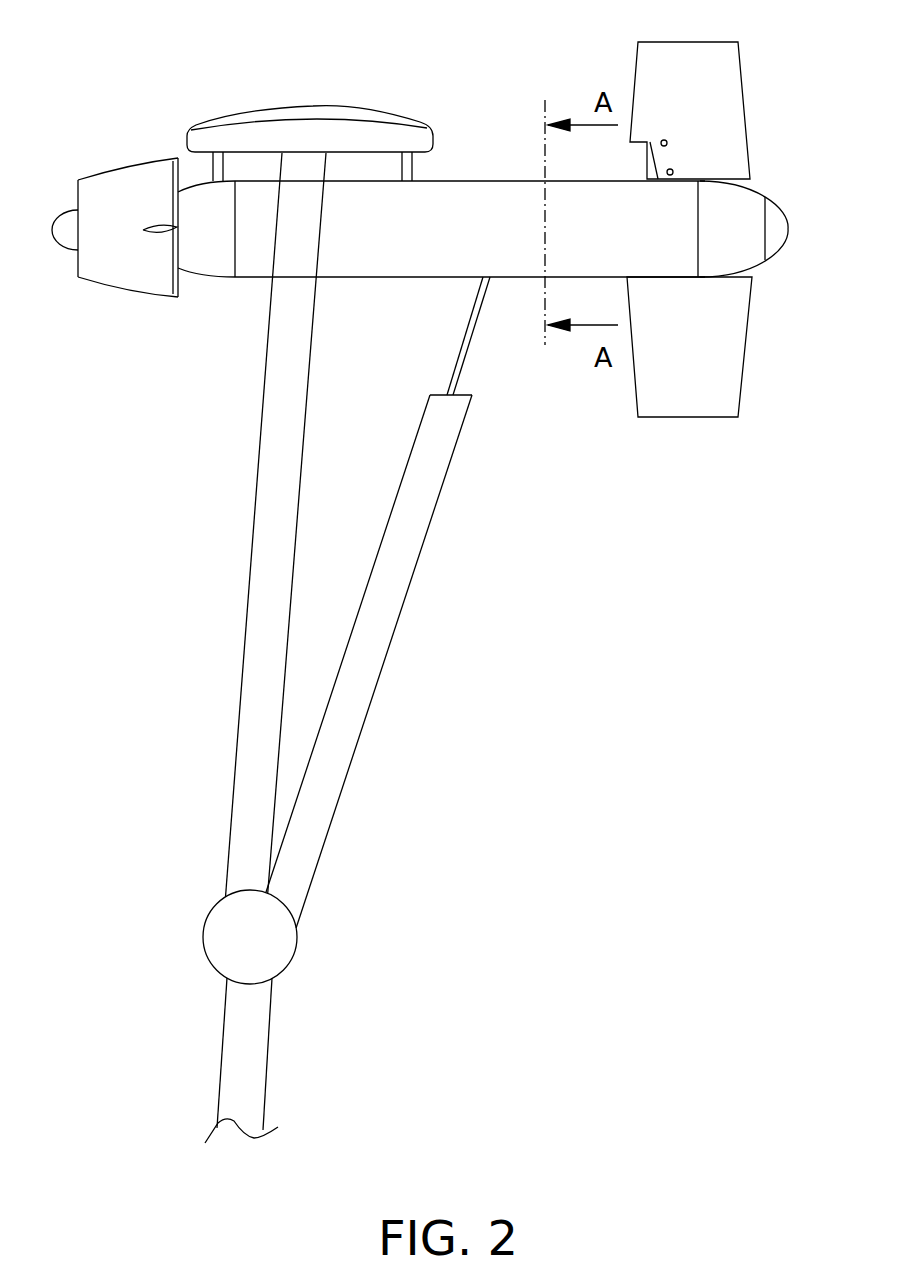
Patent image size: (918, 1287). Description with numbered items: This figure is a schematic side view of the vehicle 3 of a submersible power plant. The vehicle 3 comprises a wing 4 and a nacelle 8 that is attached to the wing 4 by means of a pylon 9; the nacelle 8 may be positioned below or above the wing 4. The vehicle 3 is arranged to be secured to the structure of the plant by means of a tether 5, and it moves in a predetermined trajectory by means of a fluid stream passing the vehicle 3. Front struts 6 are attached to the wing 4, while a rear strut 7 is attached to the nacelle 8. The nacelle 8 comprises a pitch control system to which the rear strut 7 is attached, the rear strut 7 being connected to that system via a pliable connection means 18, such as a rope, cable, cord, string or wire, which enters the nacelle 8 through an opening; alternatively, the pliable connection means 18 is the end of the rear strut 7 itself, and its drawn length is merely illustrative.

The vehicle 3 is at (167, 360).
The wing 4 is at (165, 115).
The tether 5 is at (287, 1043).
The front struts 6 is at (272, 532).
The rear strut 7 is at (402, 548).
The nacelle 8 is at (482, 220).
The pylon 9 is at (252, 165).
The pliable connection means 18 is at (470, 340).